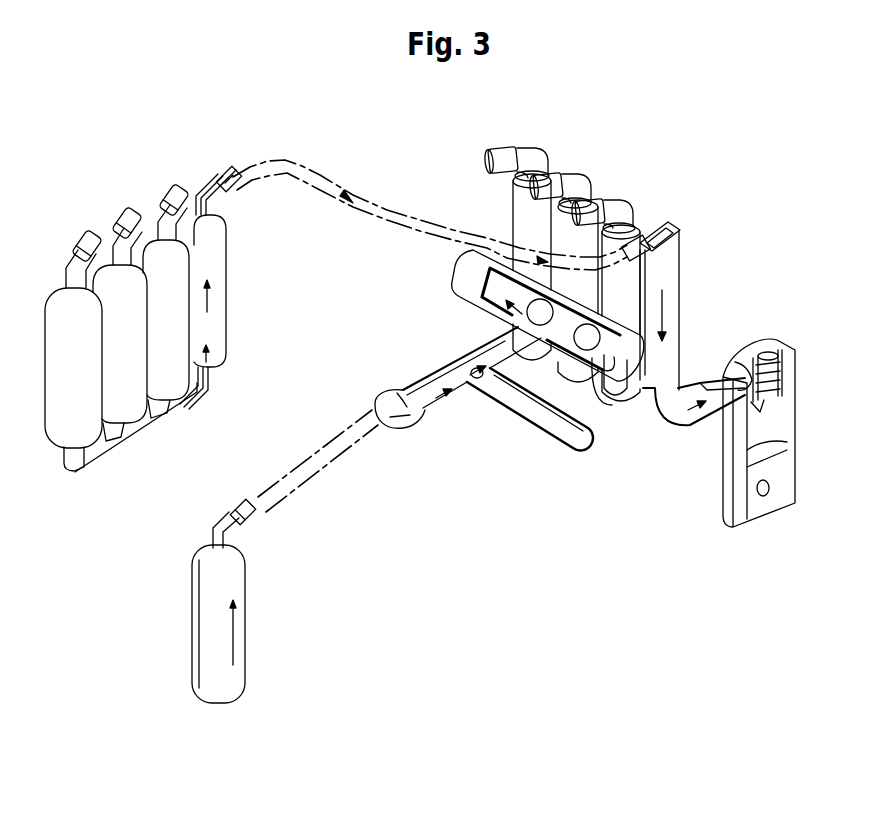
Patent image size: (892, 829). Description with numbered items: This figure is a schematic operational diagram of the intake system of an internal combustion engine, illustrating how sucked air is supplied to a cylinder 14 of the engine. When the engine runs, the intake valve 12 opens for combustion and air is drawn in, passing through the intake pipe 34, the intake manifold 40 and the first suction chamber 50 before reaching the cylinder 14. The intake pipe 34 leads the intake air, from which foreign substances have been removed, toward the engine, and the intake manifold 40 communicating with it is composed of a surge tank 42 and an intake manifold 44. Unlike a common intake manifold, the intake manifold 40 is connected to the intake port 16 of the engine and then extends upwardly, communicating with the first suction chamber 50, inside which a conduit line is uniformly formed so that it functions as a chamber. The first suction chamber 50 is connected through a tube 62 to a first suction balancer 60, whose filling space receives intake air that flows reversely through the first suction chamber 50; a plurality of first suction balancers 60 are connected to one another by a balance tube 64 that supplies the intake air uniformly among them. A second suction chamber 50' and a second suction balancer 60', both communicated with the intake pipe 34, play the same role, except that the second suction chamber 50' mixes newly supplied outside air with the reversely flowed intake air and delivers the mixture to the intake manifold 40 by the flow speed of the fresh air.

The intake valve 12 is at (753, 390).
The cylinder 14 is at (780, 415).
The intake port 16 is at (740, 387).
The intake pipe 34 is at (524, 425).
The intake manifold 40 is at (649, 466).
The surge tank 42 is at (613, 362).
The intake manifold 44 is at (640, 380).
The first suction chamber 50 is at (594, 274).
The second suction chamber 50' is at (458, 400).
The first suction balancer 60 is at (231, 287).
The second suction balancer 60' is at (254, 602).
The tube 62 is at (310, 178).
The balance tube 64 is at (140, 424).